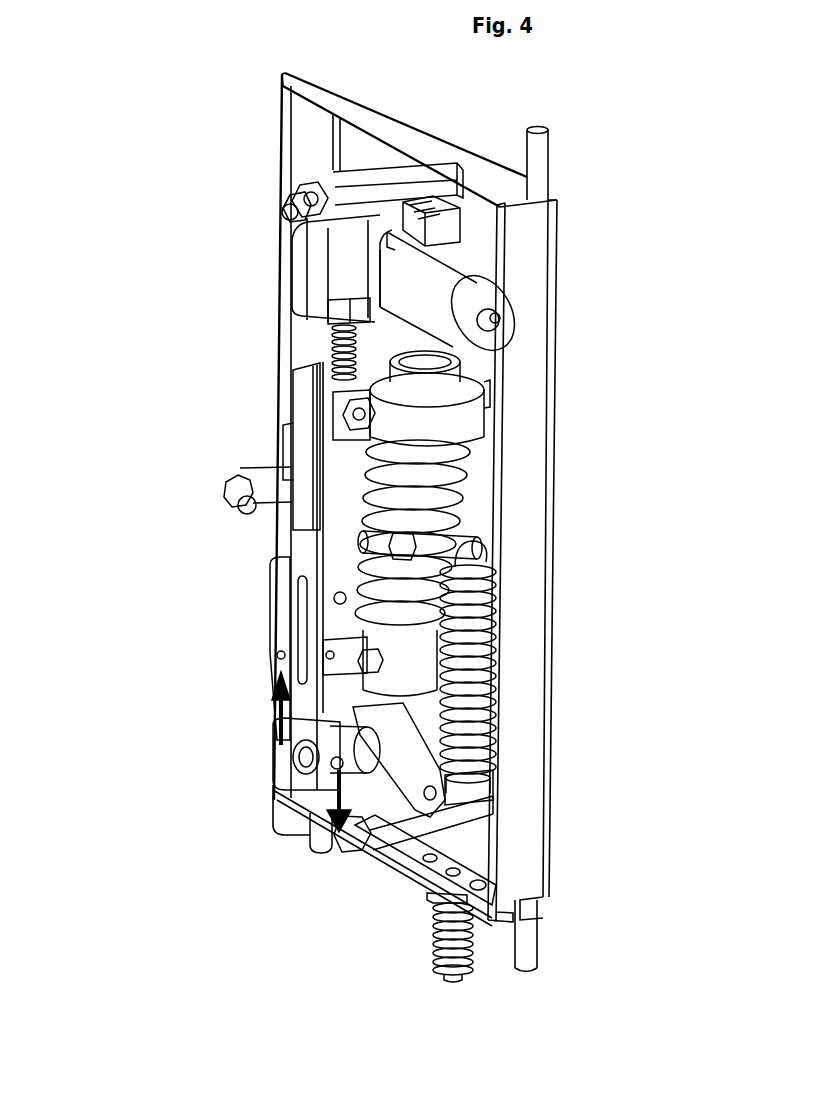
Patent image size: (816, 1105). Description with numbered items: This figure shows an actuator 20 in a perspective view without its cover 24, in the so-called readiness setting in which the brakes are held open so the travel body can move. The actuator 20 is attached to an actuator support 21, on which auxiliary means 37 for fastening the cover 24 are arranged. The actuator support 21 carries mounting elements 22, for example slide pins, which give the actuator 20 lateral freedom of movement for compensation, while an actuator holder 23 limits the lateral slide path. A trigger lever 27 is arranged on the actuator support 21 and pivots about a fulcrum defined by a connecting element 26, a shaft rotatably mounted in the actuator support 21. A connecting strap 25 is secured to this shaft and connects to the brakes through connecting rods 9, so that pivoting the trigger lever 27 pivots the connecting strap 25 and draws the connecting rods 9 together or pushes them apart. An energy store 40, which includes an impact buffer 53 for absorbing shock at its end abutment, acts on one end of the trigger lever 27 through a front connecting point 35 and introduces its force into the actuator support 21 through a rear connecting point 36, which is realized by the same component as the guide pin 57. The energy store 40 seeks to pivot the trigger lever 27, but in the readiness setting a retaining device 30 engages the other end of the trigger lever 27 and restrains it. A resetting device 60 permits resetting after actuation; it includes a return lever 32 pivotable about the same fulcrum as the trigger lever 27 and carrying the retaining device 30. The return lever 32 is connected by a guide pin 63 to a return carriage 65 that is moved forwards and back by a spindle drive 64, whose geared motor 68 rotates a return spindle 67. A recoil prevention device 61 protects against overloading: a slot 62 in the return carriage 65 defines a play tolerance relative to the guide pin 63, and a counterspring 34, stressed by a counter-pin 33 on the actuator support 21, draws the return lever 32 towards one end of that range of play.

The actuator 20 is at (176, 97).
The actuator support 21 is at (350, 138).
The mounting elements 22 is at (542, 155).
The actuator holder 23 is at (470, 975).
The cover 24 is at (524, 262).
The connecting strap 25 is at (297, 827).
The connecting element 26 is at (480, 800).
The trigger lever 27 is at (480, 750).
The retaining device 30 is at (238, 636).
The return lever 32 is at (407, 833).
The counter-pin 33 is at (480, 543).
The counterspring 34 is at (485, 657).
The front connecting point 35 is at (480, 730).
The rear connecting point 36 is at (480, 422).
The auxiliary means 37 is at (350, 193).
The energy store 40 is at (478, 503).
The impact buffer 53 is at (557, 532).
The guide pin 57 is at (545, 398).
The resetting device 60 is at (126, 280).
The recoil prevention device 61 is at (598, 657).
The slot 62 is at (283, 617).
The guide pin 63 is at (265, 692).
The spindle drive 64 is at (254, 405).
The return carriage 65 is at (280, 443).
The return spindle 67 is at (323, 343).
The geared motor 68 is at (337, 293).
The connecting rods 9 is at (272, 727).